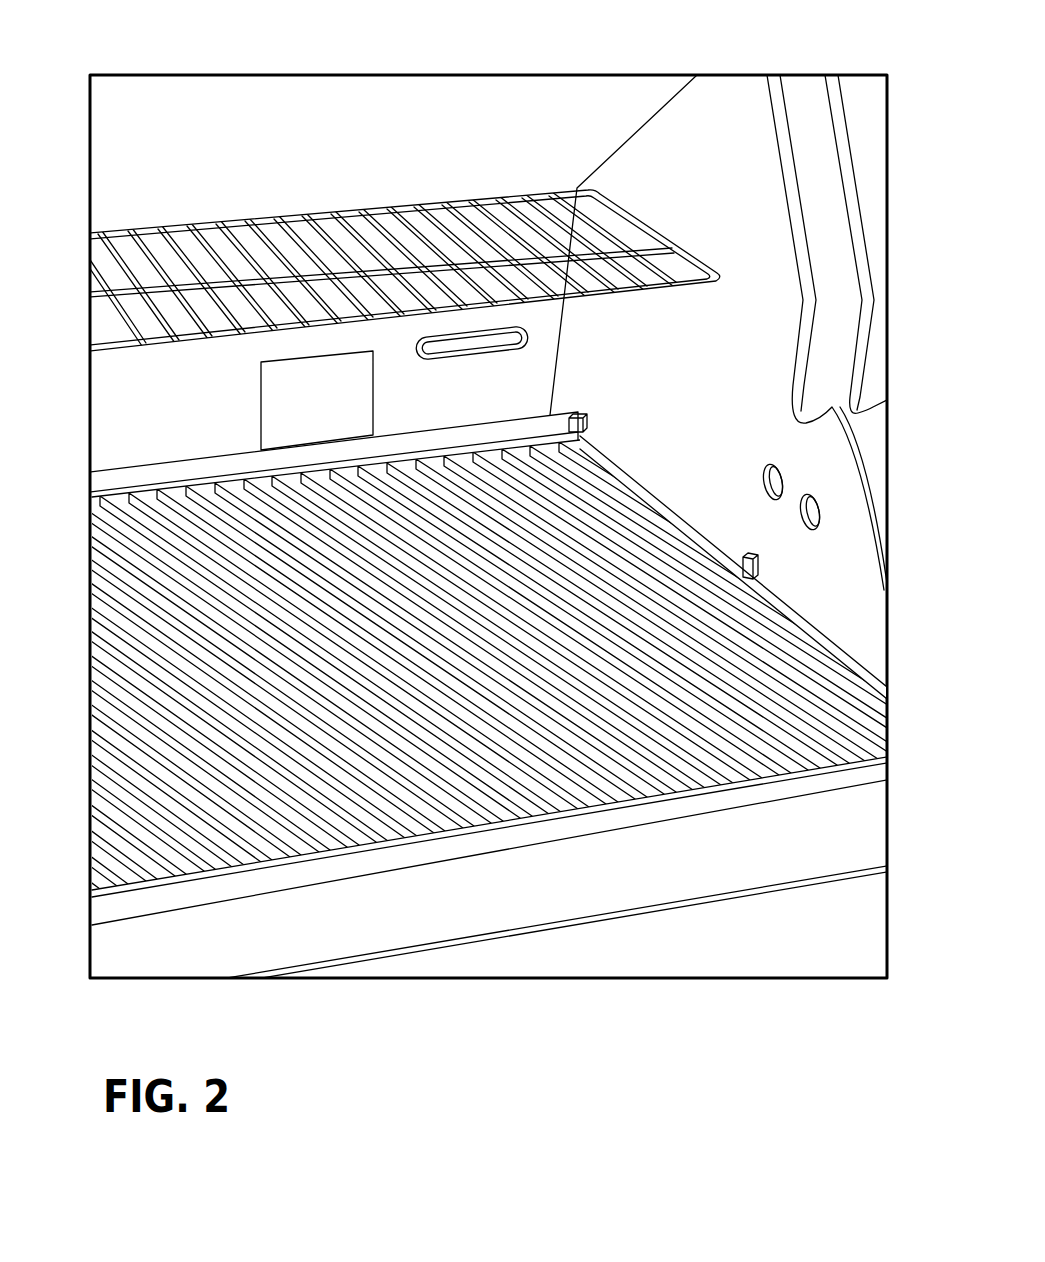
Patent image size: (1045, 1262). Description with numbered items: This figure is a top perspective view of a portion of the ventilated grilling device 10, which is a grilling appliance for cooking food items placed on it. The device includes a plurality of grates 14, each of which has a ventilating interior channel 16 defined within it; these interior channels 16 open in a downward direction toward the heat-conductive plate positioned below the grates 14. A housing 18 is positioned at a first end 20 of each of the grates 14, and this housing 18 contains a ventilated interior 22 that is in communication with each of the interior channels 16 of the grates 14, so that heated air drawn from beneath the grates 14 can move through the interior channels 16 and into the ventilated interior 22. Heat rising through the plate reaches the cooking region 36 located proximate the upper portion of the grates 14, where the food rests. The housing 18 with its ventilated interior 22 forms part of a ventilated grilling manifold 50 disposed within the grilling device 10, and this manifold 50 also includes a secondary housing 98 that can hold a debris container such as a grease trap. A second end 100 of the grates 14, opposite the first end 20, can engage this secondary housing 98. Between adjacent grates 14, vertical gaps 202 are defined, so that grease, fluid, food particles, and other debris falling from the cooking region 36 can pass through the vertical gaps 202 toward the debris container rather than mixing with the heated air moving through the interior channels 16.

The ventilated grilling device 10 is at (204, 57).
The grates 14 is at (766, 592).
The ventilating interior channels 16 is at (815, 623).
The housing 18 is at (157, 473).
The first end 20 is at (93, 500).
The ventilated interior 22 is at (200, 463).
The cooking region 36 is at (663, 494).
The ventilated grilling manifold 50 is at (86, 689).
The secondary housing 98 is at (460, 905).
The second end 100 is at (387, 837).
The vertical gaps 202 is at (585, 455).